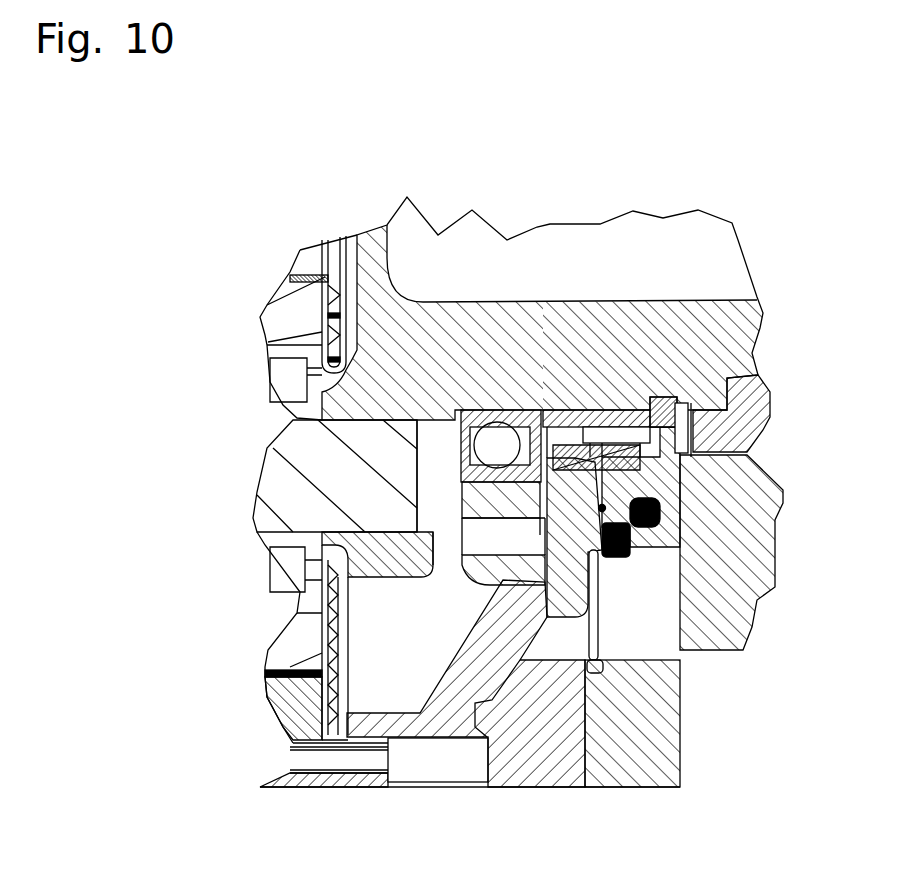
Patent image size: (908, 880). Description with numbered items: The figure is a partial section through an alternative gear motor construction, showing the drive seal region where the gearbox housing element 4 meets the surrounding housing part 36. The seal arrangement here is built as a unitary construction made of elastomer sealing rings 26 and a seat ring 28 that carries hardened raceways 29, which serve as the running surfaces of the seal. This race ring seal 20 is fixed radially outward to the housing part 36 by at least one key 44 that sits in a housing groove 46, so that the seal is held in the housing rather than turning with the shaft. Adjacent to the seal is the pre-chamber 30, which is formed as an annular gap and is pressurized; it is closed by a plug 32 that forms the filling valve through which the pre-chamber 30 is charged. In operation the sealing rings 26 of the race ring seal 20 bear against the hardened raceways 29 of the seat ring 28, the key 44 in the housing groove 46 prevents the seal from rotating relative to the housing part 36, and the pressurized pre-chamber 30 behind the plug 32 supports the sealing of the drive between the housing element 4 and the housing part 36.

The housing element 4 is at (708, 566).
The race ring seal 20 is at (586, 425).
The sealing rings 26 is at (746, 452).
The seat ring 28 is at (551, 411).
The hardened raceways 29 is at (601, 405).
The pre-chamber 30 is at (658, 518).
The plug 32 is at (616, 553).
The housing part 36 is at (626, 316).
The key 44 is at (728, 404).
The housing groove 46 is at (645, 397).